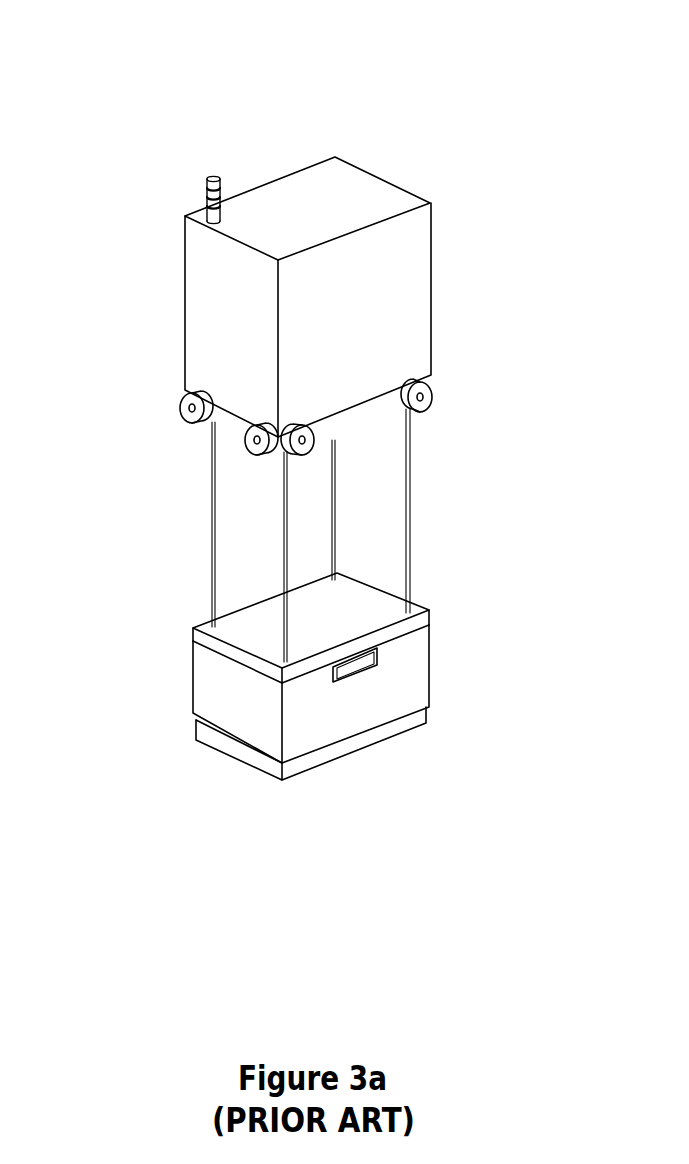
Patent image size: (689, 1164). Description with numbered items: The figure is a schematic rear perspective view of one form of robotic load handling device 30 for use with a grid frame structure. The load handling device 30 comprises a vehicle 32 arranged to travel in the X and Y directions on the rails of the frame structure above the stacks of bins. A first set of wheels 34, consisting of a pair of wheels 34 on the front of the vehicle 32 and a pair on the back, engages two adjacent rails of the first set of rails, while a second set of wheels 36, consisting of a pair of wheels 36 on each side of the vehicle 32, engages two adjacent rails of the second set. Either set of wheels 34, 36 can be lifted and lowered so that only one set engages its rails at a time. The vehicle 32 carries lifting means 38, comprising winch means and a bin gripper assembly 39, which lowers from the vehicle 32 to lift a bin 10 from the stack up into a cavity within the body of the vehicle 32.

The robotic load handling device 30 is at (157, 107).
The vehicle 32 is at (375, 285).
The first set of wheels 34 is at (428, 397).
The second set of wheels 36 is at (183, 398).
The lifting means 38 is at (412, 512).
The bin gripper assembly 39 is at (380, 617).
The bin 10 is at (402, 697).